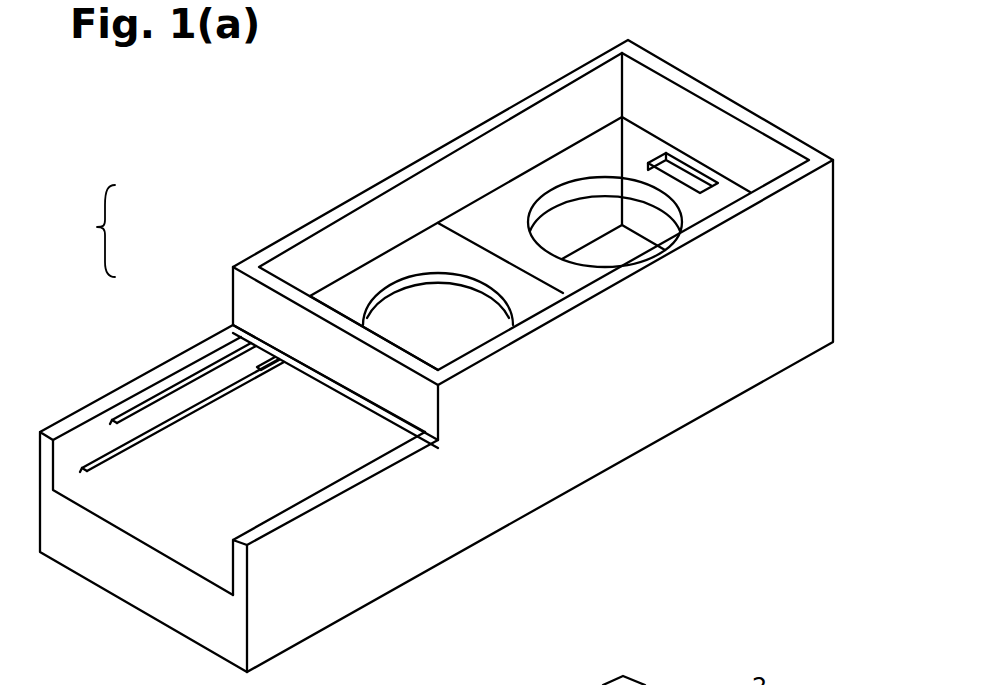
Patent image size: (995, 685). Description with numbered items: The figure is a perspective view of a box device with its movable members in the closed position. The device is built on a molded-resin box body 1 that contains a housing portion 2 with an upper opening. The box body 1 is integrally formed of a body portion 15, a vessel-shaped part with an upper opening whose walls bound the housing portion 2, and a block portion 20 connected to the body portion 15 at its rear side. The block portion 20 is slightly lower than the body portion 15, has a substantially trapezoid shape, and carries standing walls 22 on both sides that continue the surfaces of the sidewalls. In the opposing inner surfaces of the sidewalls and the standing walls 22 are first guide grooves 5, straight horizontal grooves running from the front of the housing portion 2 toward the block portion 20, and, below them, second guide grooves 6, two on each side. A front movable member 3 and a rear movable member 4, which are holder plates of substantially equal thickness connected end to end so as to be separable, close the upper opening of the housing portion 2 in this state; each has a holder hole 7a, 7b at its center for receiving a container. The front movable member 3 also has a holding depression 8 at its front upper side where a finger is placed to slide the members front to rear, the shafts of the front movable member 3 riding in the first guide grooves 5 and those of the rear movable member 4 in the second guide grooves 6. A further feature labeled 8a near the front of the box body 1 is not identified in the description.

The box body 1 is at (100, 248).
The housing portion 2 is at (680, 133).
The front movable member 3 is at (600, 170).
The rear movable member 4 is at (415, 264).
The first guide grooves 5 is at (114, 418).
The second guide grooves 6 is at (83, 464).
The holder hole 7a is at (548, 198).
The holder hole 7b is at (377, 297).
The holding depression 8 is at (705, 182).
The insertion opening 8a is at (380, 408).
The body portion 15 is at (254, 253).
The block portion 20 is at (203, 344).
The standing walls 22 is at (45, 457).